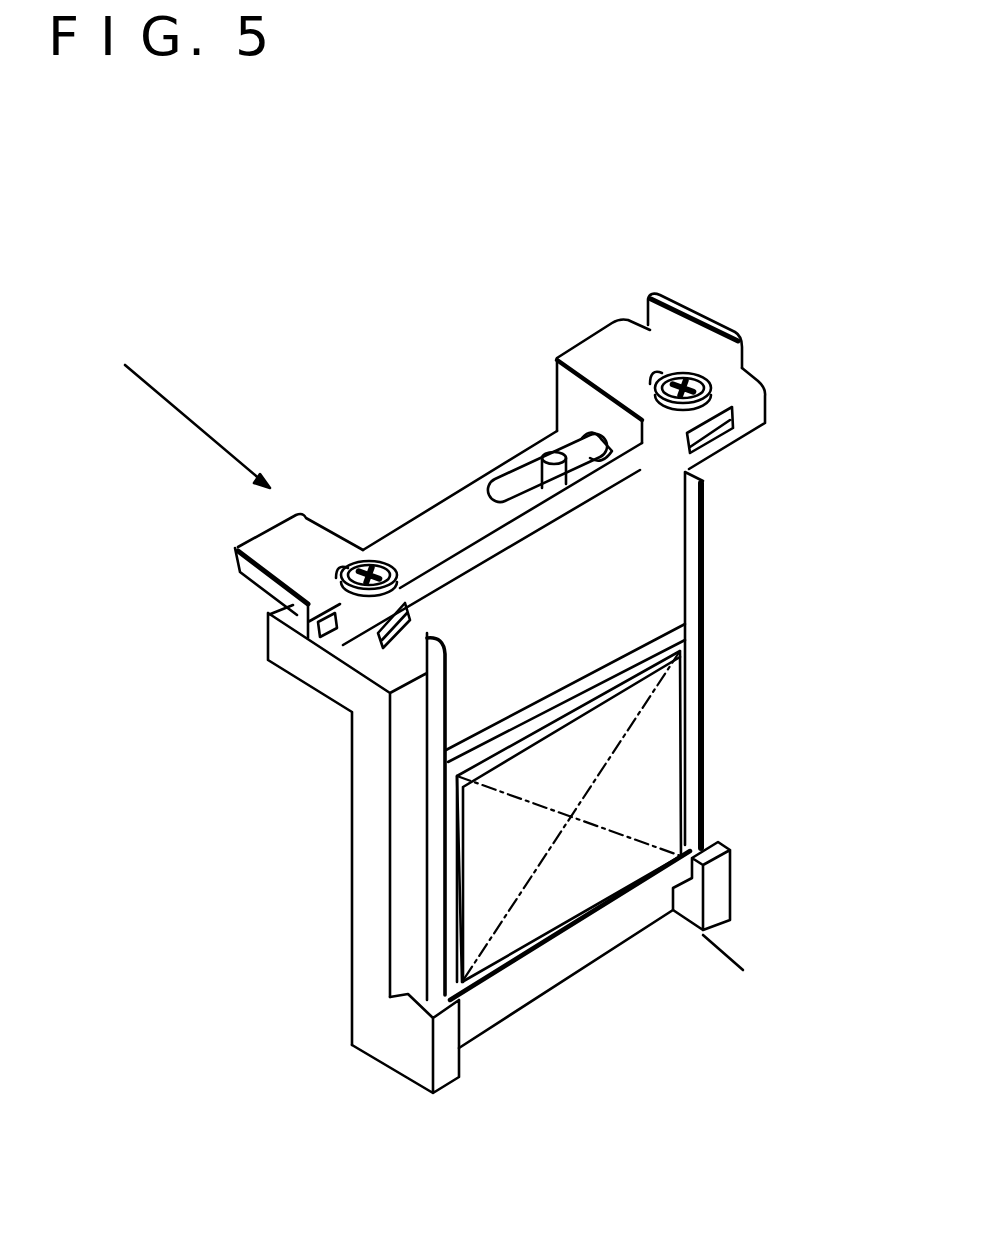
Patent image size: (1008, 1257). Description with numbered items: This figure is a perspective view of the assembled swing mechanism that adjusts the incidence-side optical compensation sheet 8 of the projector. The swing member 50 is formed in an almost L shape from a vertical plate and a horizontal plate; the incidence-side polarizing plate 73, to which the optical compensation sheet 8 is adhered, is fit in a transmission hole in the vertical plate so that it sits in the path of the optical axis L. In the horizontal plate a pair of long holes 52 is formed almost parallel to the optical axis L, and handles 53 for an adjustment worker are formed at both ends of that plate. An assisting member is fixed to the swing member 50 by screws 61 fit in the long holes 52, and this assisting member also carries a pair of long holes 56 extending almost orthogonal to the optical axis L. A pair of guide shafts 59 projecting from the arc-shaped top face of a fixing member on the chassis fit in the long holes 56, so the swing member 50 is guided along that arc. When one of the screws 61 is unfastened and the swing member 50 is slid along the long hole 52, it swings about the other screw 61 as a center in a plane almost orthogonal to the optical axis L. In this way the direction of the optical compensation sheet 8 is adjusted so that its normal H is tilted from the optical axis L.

The optical compensation sheet 8 is at (662, 729).
The swing member 50 is at (654, 551).
The long holes 52 is at (657, 373).
The handles 53 is at (714, 320).
The long holes 56 is at (505, 467).
The guide shafts 59 is at (550, 447).
The screws 61 is at (747, 377).
The incidence-side polarizing plate 73 is at (682, 637).
The optical axis L is at (200, 426).
The normal H is at (728, 948).